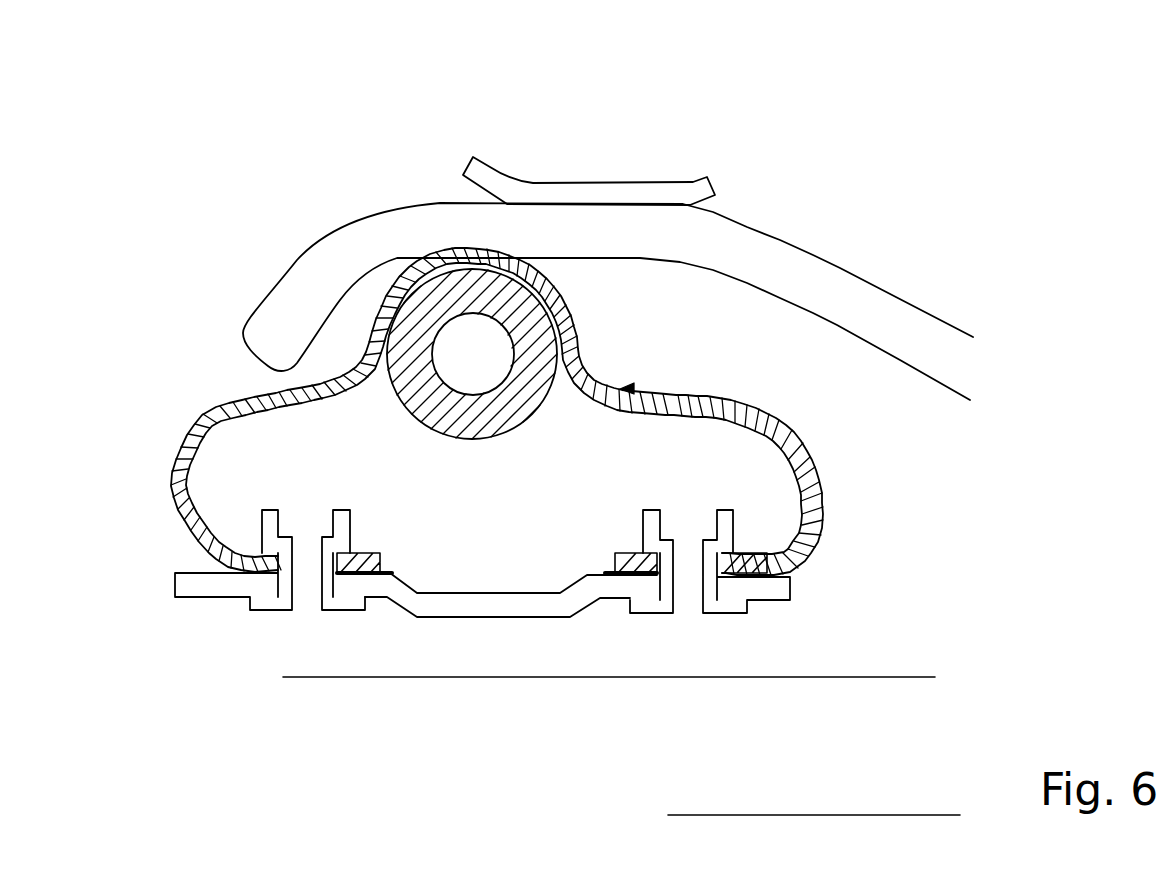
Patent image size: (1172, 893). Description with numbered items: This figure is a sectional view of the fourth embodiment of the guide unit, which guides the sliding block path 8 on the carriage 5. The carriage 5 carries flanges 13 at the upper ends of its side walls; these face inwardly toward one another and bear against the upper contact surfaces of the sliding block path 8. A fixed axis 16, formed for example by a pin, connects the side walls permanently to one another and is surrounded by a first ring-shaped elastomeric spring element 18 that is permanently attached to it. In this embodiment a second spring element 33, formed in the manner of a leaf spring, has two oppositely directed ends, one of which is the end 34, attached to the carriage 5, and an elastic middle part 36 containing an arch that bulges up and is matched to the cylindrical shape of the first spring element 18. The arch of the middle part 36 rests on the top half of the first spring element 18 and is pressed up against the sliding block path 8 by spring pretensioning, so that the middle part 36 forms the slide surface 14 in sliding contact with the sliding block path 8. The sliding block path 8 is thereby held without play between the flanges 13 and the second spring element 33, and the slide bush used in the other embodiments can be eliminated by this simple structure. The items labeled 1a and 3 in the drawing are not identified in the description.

The gap 1a is at (584, 268).
The holding bracket 3 is at (637, 517).
The carriage 5 is at (460, 620).
The sliding block path 8 is at (830, 300).
The flange 13 is at (620, 200).
The slide surface 14 is at (414, 256).
The fixed axis 16 is at (472, 358).
The first ring-shaped elastomeric spring element 18 is at (415, 338).
The second spring element 33 is at (180, 422).
The end of second spring element 34 is at (343, 575).
The elastic middle part 36 is at (484, 255).